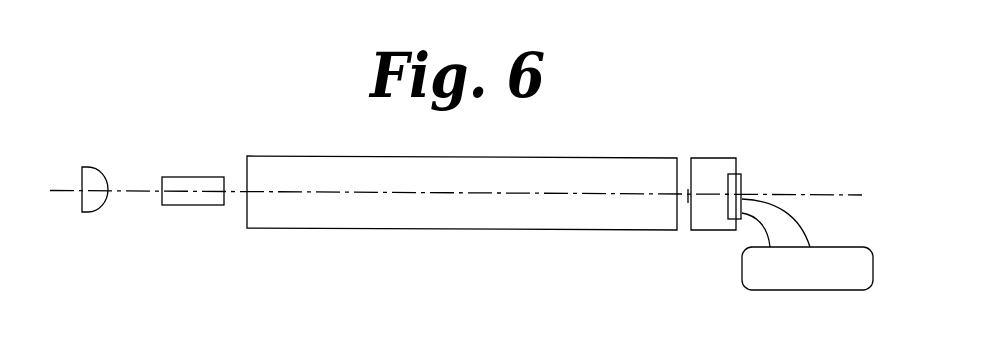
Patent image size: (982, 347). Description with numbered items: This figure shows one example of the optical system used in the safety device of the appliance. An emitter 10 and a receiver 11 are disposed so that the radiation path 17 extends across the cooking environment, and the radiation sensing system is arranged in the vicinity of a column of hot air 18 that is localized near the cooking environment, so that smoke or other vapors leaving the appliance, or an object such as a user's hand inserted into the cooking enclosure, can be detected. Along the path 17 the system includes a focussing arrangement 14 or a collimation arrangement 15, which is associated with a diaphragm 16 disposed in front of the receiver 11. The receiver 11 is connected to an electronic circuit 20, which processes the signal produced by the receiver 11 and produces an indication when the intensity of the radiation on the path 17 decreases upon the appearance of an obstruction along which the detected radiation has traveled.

The emitter 10 is at (97, 212).
The focussing arrangement 14 is at (186, 219).
The collimation arrangement 15 is at (188, 200).
The path 17 is at (382, 195).
The column of hot air 18 is at (463, 222).
The diaphragm 16 is at (687, 203).
The receiver 11 is at (743, 178).
The electronic circuit 20 is at (807, 278).